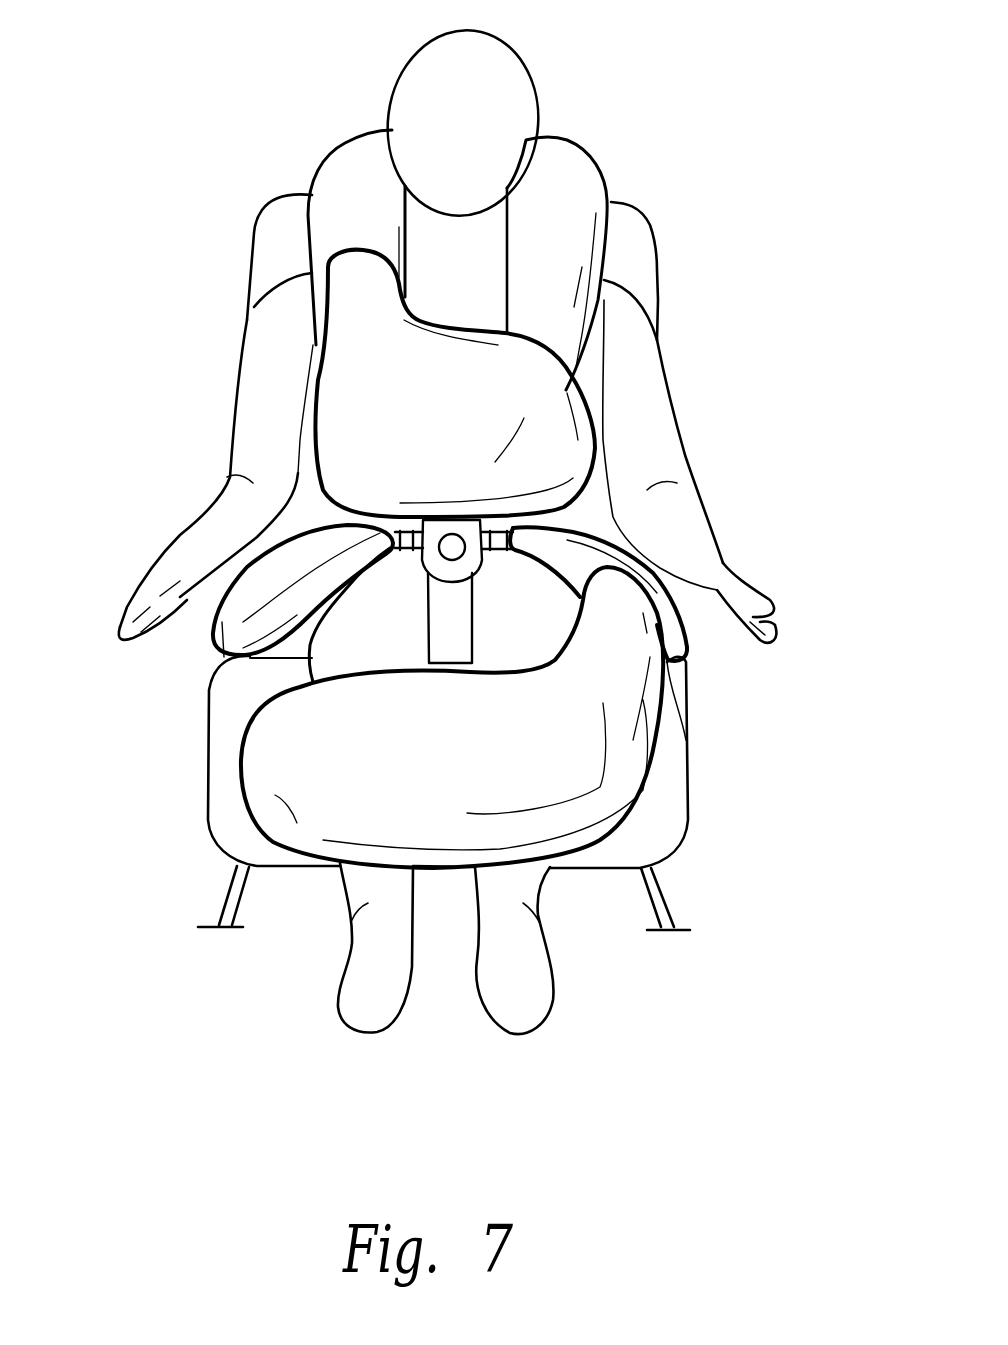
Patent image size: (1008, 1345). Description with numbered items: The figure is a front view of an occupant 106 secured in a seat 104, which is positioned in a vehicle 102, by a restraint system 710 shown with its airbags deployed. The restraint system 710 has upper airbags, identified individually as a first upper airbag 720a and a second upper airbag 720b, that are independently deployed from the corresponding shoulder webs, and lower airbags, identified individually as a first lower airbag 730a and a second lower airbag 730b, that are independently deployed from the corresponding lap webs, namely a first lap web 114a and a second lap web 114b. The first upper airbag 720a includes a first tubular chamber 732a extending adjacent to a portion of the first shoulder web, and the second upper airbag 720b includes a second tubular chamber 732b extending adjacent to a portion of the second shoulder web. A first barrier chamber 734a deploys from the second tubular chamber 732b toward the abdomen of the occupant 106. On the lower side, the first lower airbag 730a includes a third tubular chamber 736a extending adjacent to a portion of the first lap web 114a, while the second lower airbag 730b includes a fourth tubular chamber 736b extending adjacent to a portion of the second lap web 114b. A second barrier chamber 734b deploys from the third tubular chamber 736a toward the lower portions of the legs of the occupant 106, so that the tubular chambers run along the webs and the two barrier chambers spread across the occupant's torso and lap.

The vehicle 102 is at (718, 1025).
The seat 104 is at (663, 827).
The occupant 106 is at (347, 1003).
The first lap web 114a is at (680, 668).
The second lap web 114b is at (222, 662).
The restraint system 710 is at (194, 151).
The first upper airbag 720a is at (611, 151).
The second upper airbag 720b is at (303, 147).
The first lower airbag 730a is at (531, 564).
The second lower airbag 730b is at (362, 567).
The first tubular chamber 732a is at (559, 240).
The second tubular chamber 732b is at (342, 227).
The first barrier chamber 734a is at (360, 425).
The second barrier chamber 734b is at (297, 785).
The third tubular chamber 736a is at (613, 495).
The fourth tubular chamber 736b is at (287, 570).